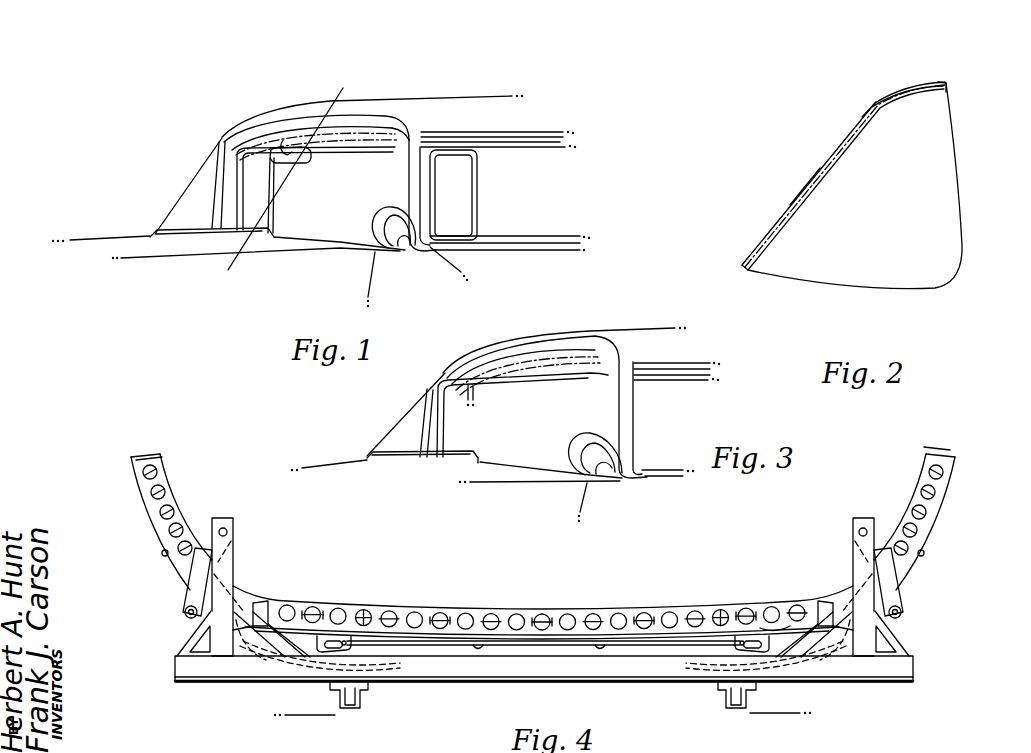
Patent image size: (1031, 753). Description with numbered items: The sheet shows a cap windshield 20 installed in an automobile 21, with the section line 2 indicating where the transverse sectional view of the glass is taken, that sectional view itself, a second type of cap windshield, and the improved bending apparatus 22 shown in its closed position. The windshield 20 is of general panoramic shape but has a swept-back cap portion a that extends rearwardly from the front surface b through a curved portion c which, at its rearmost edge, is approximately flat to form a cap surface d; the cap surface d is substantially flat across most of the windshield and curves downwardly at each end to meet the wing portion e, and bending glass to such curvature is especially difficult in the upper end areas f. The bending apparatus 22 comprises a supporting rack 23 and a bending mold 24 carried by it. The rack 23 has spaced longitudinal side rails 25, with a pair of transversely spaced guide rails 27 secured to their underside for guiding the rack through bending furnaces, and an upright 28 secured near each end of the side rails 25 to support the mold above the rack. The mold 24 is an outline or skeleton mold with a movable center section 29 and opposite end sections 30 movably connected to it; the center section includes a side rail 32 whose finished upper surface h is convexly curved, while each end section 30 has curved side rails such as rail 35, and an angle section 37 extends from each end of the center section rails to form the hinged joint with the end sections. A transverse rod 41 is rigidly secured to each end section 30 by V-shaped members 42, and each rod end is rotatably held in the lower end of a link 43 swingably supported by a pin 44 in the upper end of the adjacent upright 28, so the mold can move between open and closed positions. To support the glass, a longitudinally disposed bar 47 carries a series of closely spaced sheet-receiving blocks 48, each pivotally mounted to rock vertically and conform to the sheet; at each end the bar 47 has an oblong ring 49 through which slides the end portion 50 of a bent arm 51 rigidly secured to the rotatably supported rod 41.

In FIG. 1, the section line 2— 2 is at (326, 89).
In FIG. 1, the cap windshield 20 is at (190, 186).
In FIG. 2, the cap windshield 20 is at (822, 157).
In FIG. 1, the automobile 21 is at (412, 105).
In FIG. 1, the upper end areas f is at (398, 133).
In FIG. 2, the swept-back cap portion a is at (878, 97).
In FIG. 2, the front surface b is at (799, 199).
In FIG. 2, the curved portion c is at (872, 103).
In FIG. 2, the cap surface d is at (926, 83).
In FIG. 2, the wing portion e is at (905, 228).
In FIG. 4, the bending apparatus 22 is at (439, 596).
In FIG. 4, the supporting rack 23 is at (442, 672).
In FIG. 4, the bending mold 24 is at (482, 605).
In FIG. 4, the side rails 25 is at (572, 664).
In FIG. 4, the guide rails 27 is at (369, 698).
In FIG. 4, the upright 28 is at (222, 568).
In FIG. 4, the center section 29 is at (548, 605).
In FIG. 4, the end sections 30 is at (181, 490).
In FIG. 4, the side rail 32 is at (601, 613).
In FIG. 4, the curved side rail 35 is at (180, 527).
In FIG. 4, the angle section 37 is at (259, 608).
In FIG. 4, the transverse rod 41 is at (184, 613).
In FIG. 4, the V-shaped members 42 is at (187, 588).
In FIG. 4, the link 43 is at (214, 566).
In FIG. 4, the pin 44 is at (228, 531).
In FIG. 4, the bar 47 is at (772, 626).
In FIG. 4, the sheet-receiving blocks 48 is at (366, 609).
In FIG. 4, the oblong ring 49 is at (331, 652).
In FIG. 4, the end portion 50 is at (349, 649).
In FIG. 4, the bent arm 51 is at (247, 640).
In FIG. 4, the upper surface h is at (669, 605).